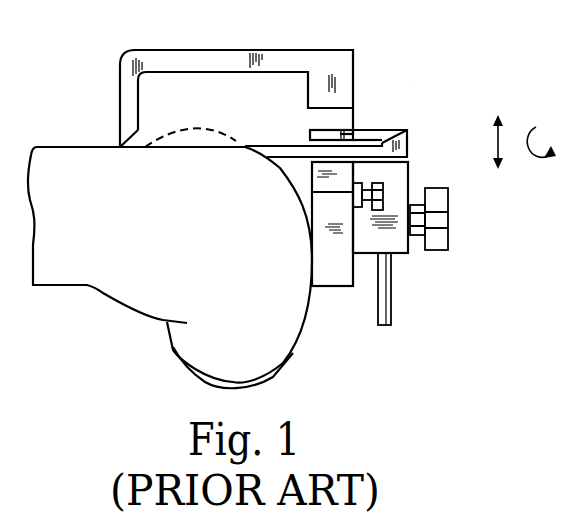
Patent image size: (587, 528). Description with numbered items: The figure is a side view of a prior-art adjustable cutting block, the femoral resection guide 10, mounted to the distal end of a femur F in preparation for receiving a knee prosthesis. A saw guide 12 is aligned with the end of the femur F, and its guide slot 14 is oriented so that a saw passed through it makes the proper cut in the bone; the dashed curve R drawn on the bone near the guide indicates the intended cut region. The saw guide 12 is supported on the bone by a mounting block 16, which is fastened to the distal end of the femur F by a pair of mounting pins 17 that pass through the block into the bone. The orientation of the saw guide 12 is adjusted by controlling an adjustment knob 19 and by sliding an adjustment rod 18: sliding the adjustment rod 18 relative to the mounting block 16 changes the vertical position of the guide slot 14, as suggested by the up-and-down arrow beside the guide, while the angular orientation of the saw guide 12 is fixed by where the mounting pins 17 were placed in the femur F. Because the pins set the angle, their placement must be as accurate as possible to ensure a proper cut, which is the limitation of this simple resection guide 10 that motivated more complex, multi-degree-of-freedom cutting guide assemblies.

The resection guide 10 is at (418, 80).
The saw guide 12 is at (372, 133).
The guide slot 14 is at (393, 130).
The mounting block 16 is at (330, 272).
The mounting pins 17 is at (380, 197).
The adjustment rod 18 is at (387, 288).
The adjustment knob 19 is at (442, 218).
The femur F is at (53, 267).
The resection line R is at (223, 132).